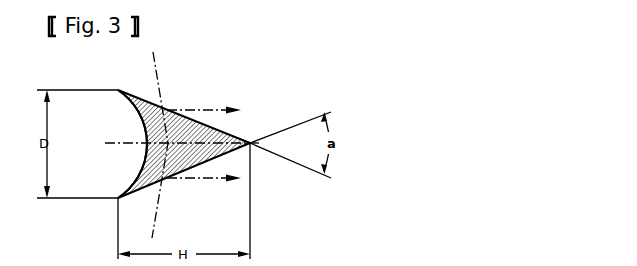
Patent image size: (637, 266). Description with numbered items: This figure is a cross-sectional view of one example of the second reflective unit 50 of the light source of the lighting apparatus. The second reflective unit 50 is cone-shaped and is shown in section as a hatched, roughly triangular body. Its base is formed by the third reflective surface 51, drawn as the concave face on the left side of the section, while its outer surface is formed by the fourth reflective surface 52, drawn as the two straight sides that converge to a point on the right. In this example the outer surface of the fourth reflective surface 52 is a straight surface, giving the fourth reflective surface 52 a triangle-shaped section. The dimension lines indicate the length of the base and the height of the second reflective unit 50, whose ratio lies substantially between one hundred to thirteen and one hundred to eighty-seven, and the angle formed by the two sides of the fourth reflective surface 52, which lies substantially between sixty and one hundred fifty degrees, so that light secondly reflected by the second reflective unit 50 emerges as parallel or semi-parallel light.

The second reflective unit 50 is at (214, 78).
The third reflective surface 51 is at (141, 175).
The fourth reflective surface 52 is at (232, 131).